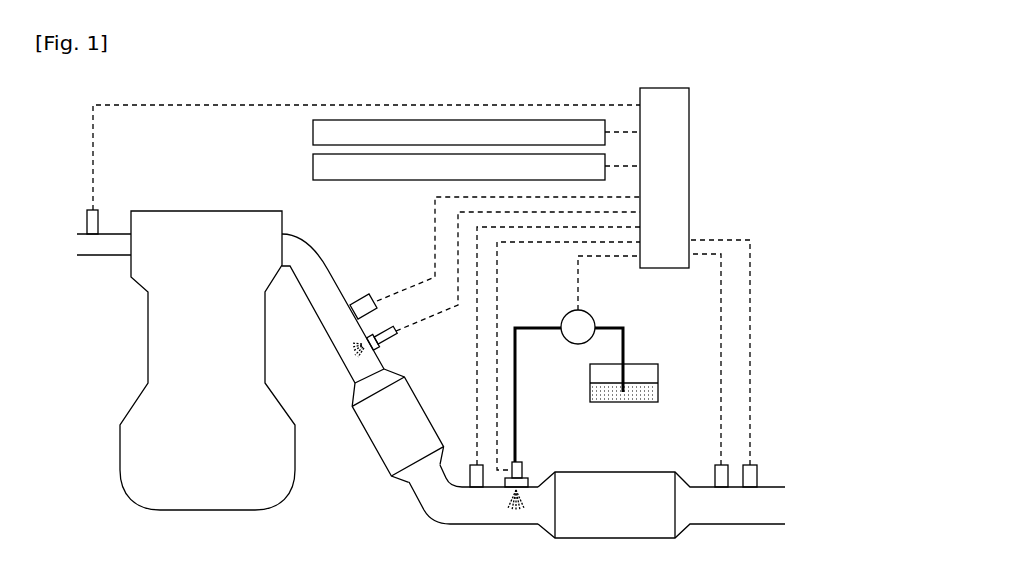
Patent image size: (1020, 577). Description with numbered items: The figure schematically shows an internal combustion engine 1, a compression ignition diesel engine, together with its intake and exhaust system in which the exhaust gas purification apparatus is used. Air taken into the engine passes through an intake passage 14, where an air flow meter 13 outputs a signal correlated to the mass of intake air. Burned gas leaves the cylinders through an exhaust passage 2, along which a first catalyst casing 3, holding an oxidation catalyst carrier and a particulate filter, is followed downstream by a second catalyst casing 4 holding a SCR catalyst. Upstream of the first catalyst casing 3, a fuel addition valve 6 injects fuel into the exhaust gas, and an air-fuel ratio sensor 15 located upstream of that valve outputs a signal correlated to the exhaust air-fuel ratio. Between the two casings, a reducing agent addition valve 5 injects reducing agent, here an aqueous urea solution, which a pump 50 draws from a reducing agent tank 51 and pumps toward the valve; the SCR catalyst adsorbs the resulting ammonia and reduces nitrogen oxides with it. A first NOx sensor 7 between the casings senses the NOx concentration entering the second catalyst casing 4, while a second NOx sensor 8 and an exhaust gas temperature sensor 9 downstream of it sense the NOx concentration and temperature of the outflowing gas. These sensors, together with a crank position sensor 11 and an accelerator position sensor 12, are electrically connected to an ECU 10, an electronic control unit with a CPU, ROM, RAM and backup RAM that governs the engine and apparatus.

The internal combustion engine 1 is at (212, 510).
The exhaust passage 2 is at (318, 243).
The first catalyst casing 3 is at (373, 462).
The second catalyst casing 4 is at (626, 471).
The reducing agent addition valve 5 is at (526, 465).
The fuel addition valve 6 is at (401, 342).
The first NOx sensor 7 is at (474, 463).
The second NOx sensor 8 is at (713, 470).
The exhaust gas temperature sensor 9 is at (757, 470).
The ECU 10 is at (690, 140).
The crank position sensor 11 is at (313, 166).
The accelerator position sensor 12 is at (313, 133).
The air flow meter 13 is at (91, 208).
The intake passage 14 is at (115, 257).
The air-fuel ratio sensor 15 is at (360, 297).
The pump 50 is at (592, 318).
The reducing agent tank 51 is at (648, 363).